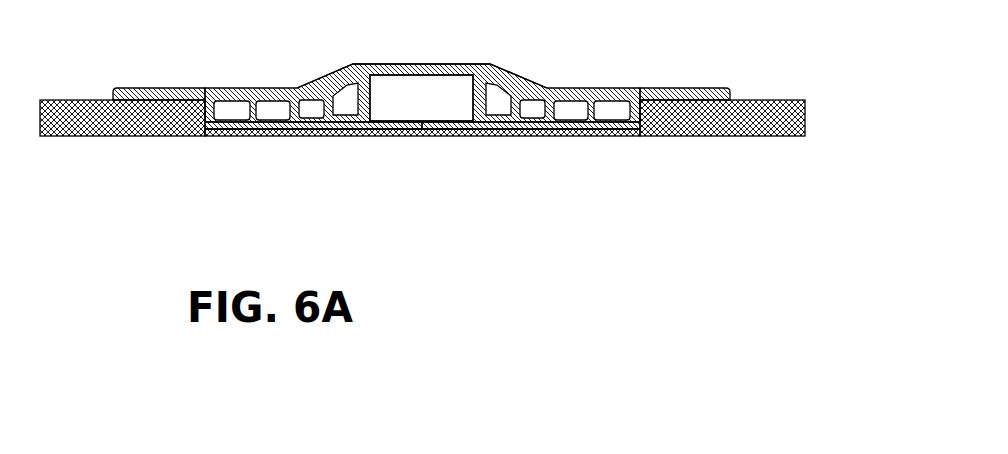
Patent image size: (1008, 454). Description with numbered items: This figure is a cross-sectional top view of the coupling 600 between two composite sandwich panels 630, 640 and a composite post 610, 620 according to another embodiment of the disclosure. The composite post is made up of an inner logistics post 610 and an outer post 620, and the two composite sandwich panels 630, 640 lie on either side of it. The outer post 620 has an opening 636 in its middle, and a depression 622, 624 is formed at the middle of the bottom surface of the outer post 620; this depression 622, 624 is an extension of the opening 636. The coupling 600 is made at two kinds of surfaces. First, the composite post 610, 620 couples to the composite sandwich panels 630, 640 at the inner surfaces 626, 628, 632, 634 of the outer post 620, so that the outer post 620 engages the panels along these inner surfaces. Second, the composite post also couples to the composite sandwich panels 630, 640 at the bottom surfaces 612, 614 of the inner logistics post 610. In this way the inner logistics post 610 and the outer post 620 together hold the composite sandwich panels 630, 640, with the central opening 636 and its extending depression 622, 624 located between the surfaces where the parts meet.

The coupling 600 is at (337, 40).
The inner logistics post 610 is at (422, 164).
The bottom surface of inner logistics post 612 is at (531, 173).
The bottom surface of inner logistics post 614 is at (313, 173).
The outer post 620 is at (428, 50).
The depression 622 is at (531, 147).
The depression 624 is at (313, 151).
The inner surface of outer post 626 is at (138, 69).
The inner surface of outer post 628 is at (714, 70).
The composite sandwich panel 630 is at (122, 141).
The inner surface of outer post 632 is at (193, 73).
The inner surface of outer post 634 is at (642, 77).
The opening 636 is at (417, 69).
The composite sandwich panel 640 is at (722, 159).